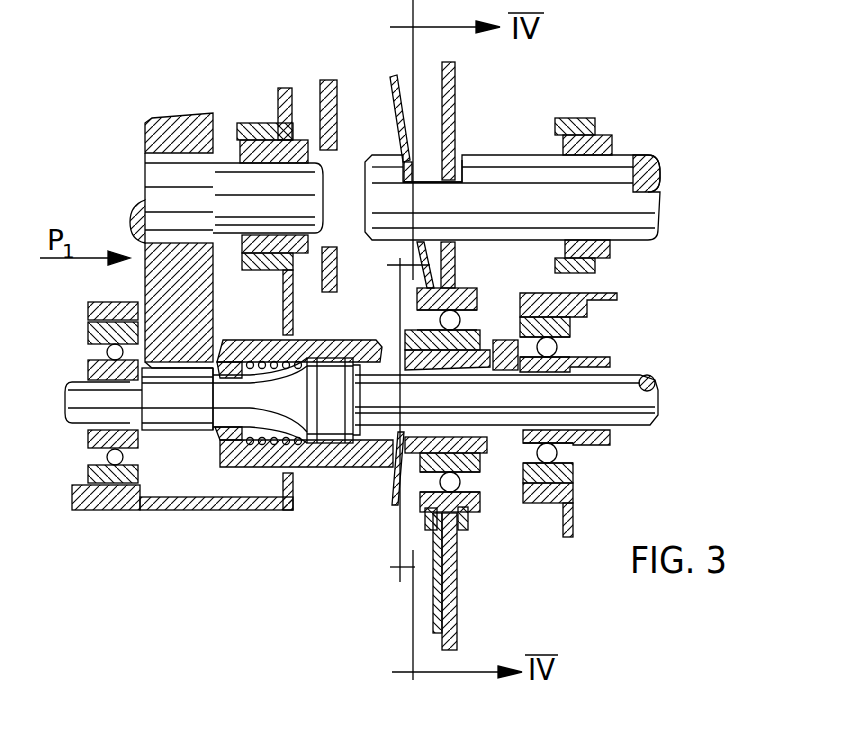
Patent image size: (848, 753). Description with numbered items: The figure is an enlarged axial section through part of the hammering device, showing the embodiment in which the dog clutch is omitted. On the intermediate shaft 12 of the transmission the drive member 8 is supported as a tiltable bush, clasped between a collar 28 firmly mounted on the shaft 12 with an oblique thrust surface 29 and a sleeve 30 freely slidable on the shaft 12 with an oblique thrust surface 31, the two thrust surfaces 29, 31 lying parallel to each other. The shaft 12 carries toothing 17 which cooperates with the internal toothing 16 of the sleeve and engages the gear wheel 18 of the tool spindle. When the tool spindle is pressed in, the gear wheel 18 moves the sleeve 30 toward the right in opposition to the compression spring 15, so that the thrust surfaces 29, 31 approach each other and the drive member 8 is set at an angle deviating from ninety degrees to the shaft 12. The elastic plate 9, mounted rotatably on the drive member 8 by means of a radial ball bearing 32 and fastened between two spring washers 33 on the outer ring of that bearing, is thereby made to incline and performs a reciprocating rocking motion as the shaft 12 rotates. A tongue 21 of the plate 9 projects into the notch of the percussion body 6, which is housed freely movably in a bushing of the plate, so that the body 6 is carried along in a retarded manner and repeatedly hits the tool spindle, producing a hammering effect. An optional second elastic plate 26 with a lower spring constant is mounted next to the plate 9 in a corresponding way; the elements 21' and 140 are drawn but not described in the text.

The percussion body 6 is at (626, 172).
The drive member 8 is at (400, 486).
The elastic plate 9 is at (452, 101).
The intermediate shaft 12 is at (630, 395).
The compression spring 15 is at (247, 440).
The internal toothing 16 is at (212, 432).
The toothing 17 is at (165, 410).
The gear wheel 18 is at (200, 120).
The tongue 21 is at (452, 146).
The pin 21' is at (425, 107).
The second elastic plate 26 is at (393, 76).
The collar 28 is at (500, 342).
The oblique thrust surface 29 is at (505, 455).
The sleeve 30 is at (265, 468).
The oblique thrust surface 31 is at (381, 365).
The radial ball bearing 32 is at (480, 497).
The spring washers 33 is at (425, 525).
The bar 140 is at (322, 78).